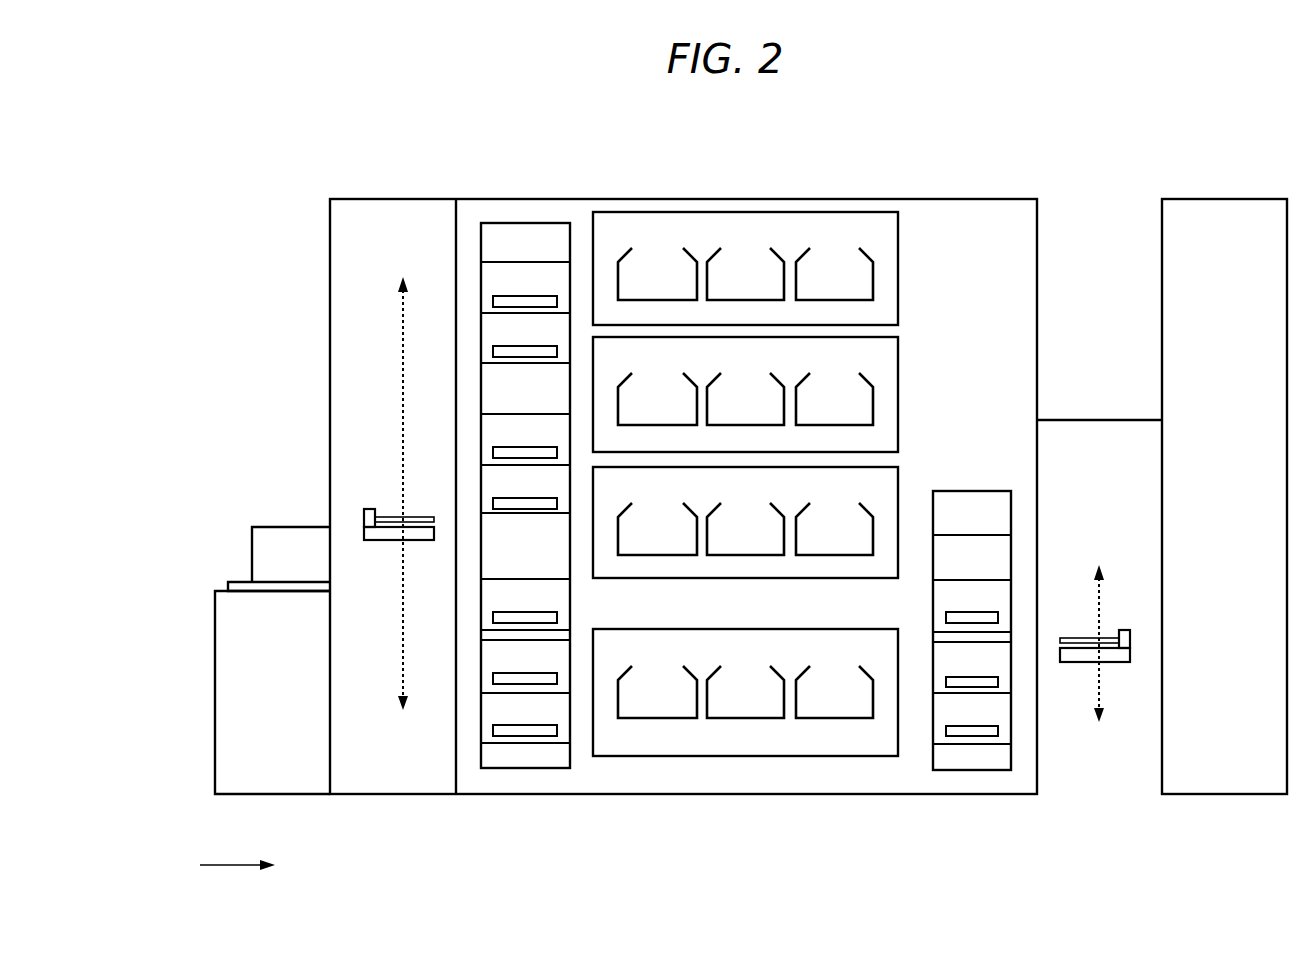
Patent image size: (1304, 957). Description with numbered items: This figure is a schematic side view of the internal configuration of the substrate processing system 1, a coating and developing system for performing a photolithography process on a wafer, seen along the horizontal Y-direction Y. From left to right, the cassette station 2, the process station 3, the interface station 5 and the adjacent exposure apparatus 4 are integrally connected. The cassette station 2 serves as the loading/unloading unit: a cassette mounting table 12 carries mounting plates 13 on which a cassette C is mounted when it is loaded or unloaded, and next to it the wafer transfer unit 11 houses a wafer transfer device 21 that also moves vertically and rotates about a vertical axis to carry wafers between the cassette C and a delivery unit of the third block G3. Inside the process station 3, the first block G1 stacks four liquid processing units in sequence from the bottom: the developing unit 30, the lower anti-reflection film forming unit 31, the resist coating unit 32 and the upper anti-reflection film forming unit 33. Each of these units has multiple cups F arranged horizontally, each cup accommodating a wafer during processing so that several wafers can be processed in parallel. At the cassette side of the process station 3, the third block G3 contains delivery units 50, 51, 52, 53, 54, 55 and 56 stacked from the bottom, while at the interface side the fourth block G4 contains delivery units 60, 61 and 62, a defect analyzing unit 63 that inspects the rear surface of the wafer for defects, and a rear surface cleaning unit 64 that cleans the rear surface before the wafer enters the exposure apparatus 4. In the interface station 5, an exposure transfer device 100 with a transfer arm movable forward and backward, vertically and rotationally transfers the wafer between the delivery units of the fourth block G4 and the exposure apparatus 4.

The substrate processing system 1 is at (822, 168).
The cassette station 2 is at (217, 797).
The process station 3 is at (1036, 797).
The exposure apparatus 4 is at (1162, 797).
The interface station 5 is at (1037, 797).
The wafer transfer unit 11 is at (330, 192).
The cassette mounting table 12 is at (217, 638).
The mounting plate 13 is at (228, 587).
The cassette C is at (258, 553).
The wafer transfer device 21 is at (370, 508).
The third block G3 is at (489, 453).
The first block G1 is at (779, 447).
The fourth block G4 is at (1021, 600).
The developing unit 30 is at (892, 631).
The lower anti-reflection film forming unit 31 is at (898, 487).
The resist coating unit 32 is at (898, 377).
The upper anti-reflection film forming unit 33 is at (898, 257).
The cup F is at (872, 261).
The delivery unit 50 is at (481, 728).
The delivery unit 51 is at (481, 660).
The delivery unit 52 is at (481, 593).
The delivery unit 53 is at (481, 498).
The delivery unit 54 is at (481, 447).
The delivery unit 55 is at (481, 350).
The delivery unit 56 is at (481, 282).
The delivery unit 60 is at (1011, 718).
The delivery unit 61 is at (1011, 664).
The delivery unit 62 is at (1011, 602).
The defect analyzing unit 63 is at (1011, 560).
The rear surface cleaning unit 64 is at (1011, 517).
The exposure transfer device 100 is at (1125, 629).
The Y-direction Y is at (248, 864).